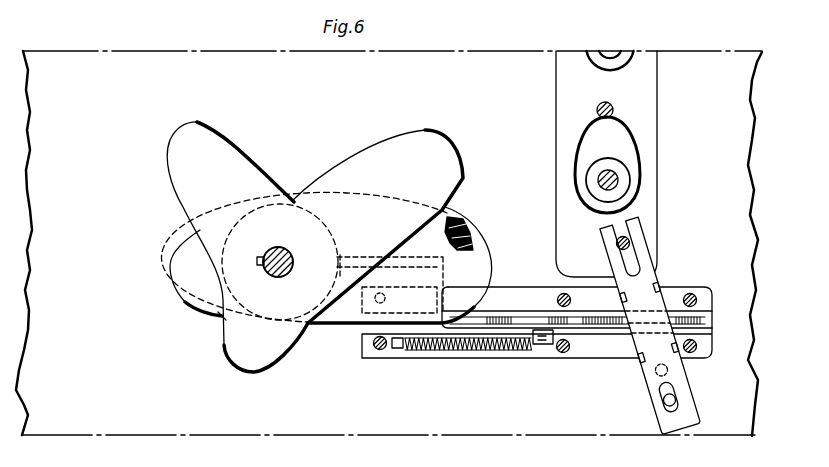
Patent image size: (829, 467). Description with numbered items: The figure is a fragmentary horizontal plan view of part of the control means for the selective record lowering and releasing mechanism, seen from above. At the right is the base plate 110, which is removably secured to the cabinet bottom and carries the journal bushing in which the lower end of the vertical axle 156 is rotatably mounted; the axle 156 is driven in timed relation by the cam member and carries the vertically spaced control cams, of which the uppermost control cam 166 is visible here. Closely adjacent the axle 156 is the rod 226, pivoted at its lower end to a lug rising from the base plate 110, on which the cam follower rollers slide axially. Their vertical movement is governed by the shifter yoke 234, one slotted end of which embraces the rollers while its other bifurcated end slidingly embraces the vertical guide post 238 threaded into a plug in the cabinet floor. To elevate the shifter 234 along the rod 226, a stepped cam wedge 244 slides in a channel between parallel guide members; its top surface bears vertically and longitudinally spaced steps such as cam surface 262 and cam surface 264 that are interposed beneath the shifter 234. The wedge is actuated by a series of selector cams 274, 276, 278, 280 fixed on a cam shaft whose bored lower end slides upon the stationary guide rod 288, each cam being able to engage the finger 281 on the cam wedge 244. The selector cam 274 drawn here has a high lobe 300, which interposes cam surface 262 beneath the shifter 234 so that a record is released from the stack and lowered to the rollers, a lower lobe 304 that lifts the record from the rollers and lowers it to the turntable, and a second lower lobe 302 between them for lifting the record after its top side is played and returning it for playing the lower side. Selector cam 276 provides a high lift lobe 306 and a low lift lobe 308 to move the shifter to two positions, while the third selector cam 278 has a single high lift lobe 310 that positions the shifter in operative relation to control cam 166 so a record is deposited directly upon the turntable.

The base plate 110 is at (647, 92).
The vertical axle 156 is at (615, 177).
The control cam 166 is at (620, 148).
The rod 226 is at (628, 242).
The shifter yoke 234 is at (645, 287).
The vertical guide post 238 is at (675, 400).
The stepped cam wedge 244 is at (582, 320).
The cam surface 262 is at (467, 320).
The cam surface 264 is at (528, 323).
The selector cam 274 is at (340, 183).
The selector cam 276 is at (255, 203).
The selector cam 278 is at (247, 245).
The selector cam 280 is at (222, 317).
The finger 281 is at (349, 265).
The stationary guide rod 288 is at (287, 233).
The high lobe 300 is at (453, 165).
The second lower lobe 302 is at (212, 143).
The lower lobe 304 is at (255, 355).
The high lift lobe 306 is at (473, 270).
The low lift lobe 308 is at (188, 282).
The single high lift lobe 310 is at (463, 233).